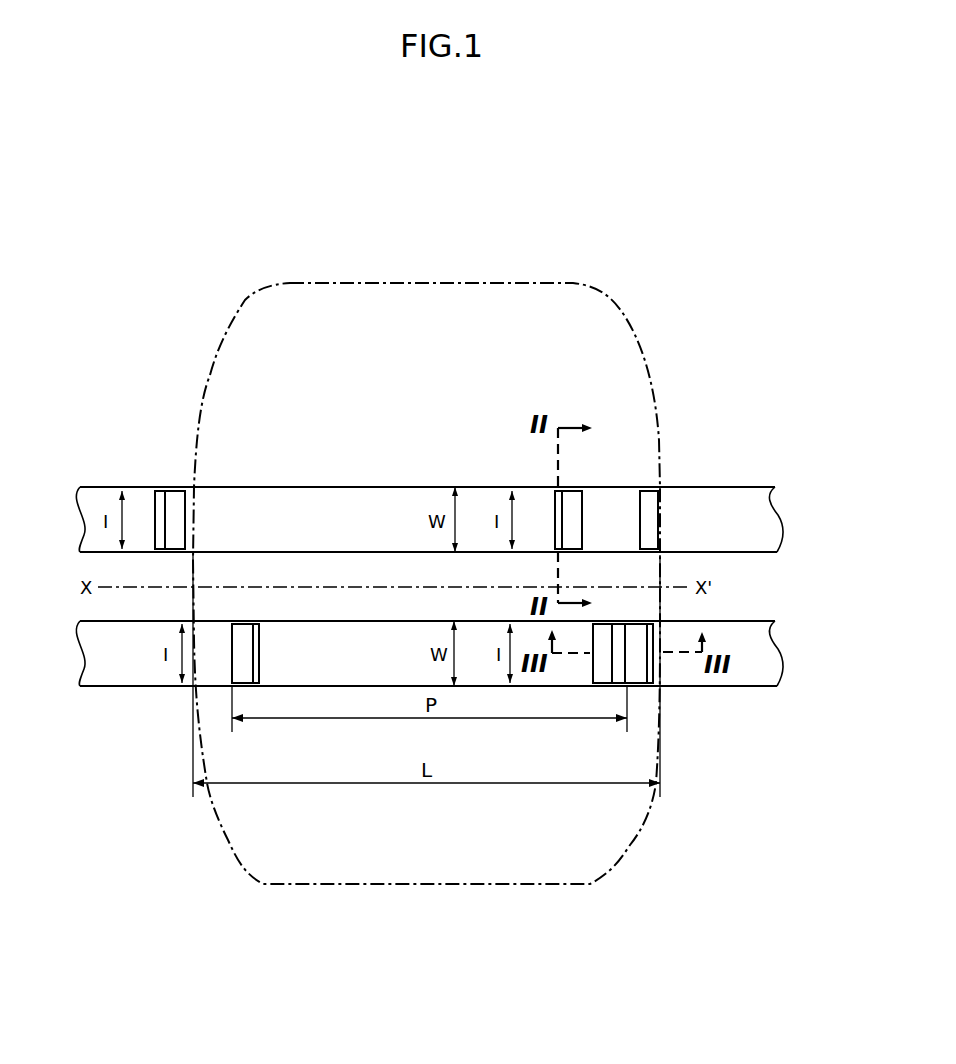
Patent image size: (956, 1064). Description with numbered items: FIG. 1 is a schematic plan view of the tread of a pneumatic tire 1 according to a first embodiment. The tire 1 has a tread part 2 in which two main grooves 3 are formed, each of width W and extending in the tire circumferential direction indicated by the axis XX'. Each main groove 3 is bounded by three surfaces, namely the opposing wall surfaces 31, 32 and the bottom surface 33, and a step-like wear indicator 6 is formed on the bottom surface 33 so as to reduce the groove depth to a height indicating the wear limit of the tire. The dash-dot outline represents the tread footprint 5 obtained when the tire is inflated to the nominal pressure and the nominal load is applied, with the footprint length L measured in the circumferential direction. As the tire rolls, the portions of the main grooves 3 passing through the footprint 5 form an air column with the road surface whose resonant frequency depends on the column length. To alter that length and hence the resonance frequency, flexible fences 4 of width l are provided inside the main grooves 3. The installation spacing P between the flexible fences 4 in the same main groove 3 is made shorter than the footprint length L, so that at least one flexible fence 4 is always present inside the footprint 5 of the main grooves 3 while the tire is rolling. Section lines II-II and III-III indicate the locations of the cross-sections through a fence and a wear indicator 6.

The pneumatic tire 1 is at (636, 386).
The tread part 2 is at (358, 700).
The main groove 3 is at (750, 535).
The flexible fence 4 is at (157, 500).
The tread footprint 5 is at (213, 355).
The wear indicator 6 is at (650, 492).
The wall surface 31 is at (686, 494).
The wall surface 32 is at (680, 550).
The bottom surface 33 is at (274, 588).